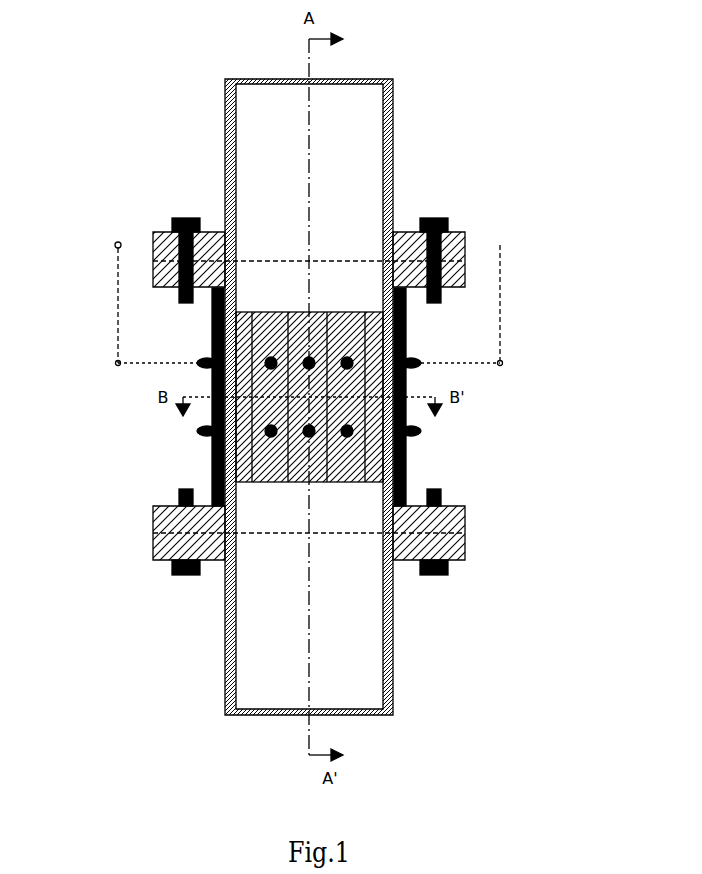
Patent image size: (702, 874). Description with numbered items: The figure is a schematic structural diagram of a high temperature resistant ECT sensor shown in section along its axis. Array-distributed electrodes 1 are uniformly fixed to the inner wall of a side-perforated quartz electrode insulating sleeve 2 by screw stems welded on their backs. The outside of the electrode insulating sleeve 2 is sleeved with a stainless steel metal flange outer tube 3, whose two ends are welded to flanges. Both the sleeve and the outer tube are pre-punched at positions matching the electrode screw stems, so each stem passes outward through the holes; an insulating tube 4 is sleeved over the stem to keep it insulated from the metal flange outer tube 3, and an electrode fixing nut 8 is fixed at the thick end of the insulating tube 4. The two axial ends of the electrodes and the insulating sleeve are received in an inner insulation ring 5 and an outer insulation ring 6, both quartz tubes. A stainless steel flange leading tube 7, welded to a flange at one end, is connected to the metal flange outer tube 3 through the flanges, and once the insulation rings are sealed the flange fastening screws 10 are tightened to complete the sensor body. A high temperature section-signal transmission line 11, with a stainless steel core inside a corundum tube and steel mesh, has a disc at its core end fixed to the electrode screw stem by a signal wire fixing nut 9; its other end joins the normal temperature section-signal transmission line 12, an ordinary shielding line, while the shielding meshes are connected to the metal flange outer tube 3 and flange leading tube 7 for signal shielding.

The array-distributed electrode 1 is at (212, 337).
The electrode insulating sleeve 2 is at (213, 378).
The metal flange outer tube 3 is at (213, 418).
The insulating tube 4 is at (207, 433).
The inner insulation ring 5 is at (213, 305).
The outer insulation ring 6 is at (407, 303).
The flange leading tube 7 is at (393, 135).
The electrode fixing nut 8 is at (420, 432).
The signal wire fixing nut 9 is at (420, 366).
The flange fastening screw 10 is at (448, 227).
The high temperature section-signal transmission line 11 is at (421, 364).
The normal temperature section-signal transmission line 12 is at (500, 273).